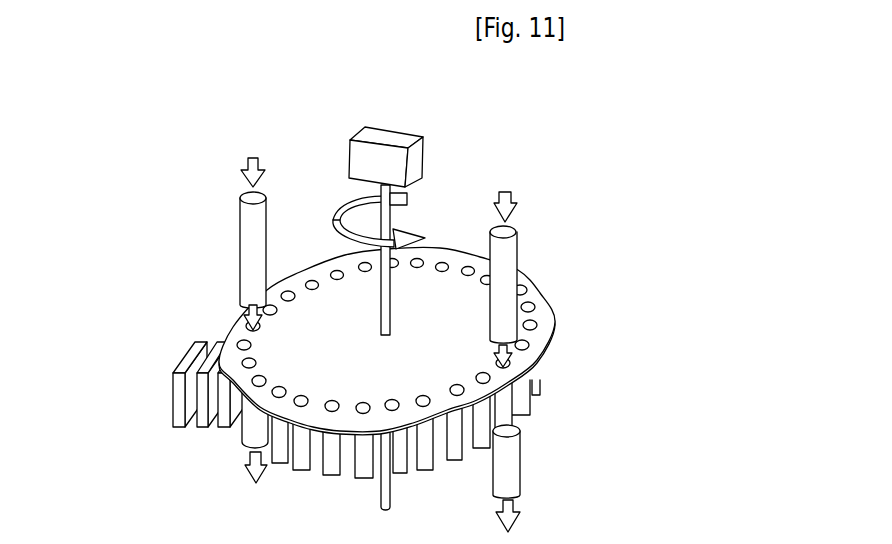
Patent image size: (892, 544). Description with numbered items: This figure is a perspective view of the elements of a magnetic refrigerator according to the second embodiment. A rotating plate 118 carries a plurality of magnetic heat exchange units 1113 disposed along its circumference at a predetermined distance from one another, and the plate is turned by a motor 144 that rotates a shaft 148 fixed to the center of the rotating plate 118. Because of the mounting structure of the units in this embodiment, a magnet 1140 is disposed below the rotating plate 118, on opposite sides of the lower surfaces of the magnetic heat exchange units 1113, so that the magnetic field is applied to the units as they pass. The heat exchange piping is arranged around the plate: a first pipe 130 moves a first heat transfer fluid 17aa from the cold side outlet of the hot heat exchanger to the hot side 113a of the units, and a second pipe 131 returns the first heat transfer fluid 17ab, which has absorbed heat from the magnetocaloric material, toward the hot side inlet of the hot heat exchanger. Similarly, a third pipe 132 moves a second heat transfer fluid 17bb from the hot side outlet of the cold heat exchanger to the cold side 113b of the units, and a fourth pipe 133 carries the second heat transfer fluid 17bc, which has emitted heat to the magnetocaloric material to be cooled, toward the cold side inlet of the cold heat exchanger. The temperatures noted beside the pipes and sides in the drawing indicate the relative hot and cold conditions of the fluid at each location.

The motor 144 is at (393, 136).
The shaft 148 is at (391, 216).
The rotating plate 118 is at (549, 321).
The magnetic heat exchange units 1113 is at (362, 477).
The magnet 1140 is at (178, 369).
The first pipe 130 is at (245, 237).
The second pipe 131 is at (242, 438).
The third pipe 132 is at (512, 247).
The fourth pipe 133 is at (515, 455).
The hot side 113a is at (248, 312).
The cold side 113b is at (510, 353).
The first heat transfer fluid 17aa is at (245, 163).
The first heat transfer fluid 17ab is at (250, 477).
The second heat transfer fluid 17bb is at (503, 192).
The second heat transfer fluid 17bc is at (500, 513).